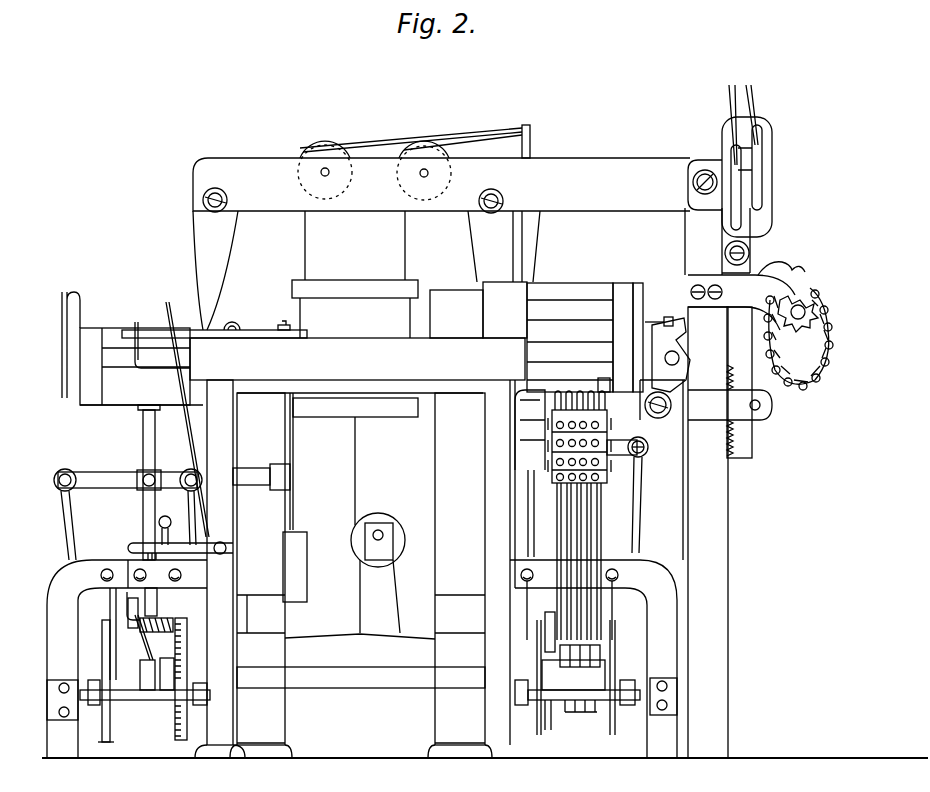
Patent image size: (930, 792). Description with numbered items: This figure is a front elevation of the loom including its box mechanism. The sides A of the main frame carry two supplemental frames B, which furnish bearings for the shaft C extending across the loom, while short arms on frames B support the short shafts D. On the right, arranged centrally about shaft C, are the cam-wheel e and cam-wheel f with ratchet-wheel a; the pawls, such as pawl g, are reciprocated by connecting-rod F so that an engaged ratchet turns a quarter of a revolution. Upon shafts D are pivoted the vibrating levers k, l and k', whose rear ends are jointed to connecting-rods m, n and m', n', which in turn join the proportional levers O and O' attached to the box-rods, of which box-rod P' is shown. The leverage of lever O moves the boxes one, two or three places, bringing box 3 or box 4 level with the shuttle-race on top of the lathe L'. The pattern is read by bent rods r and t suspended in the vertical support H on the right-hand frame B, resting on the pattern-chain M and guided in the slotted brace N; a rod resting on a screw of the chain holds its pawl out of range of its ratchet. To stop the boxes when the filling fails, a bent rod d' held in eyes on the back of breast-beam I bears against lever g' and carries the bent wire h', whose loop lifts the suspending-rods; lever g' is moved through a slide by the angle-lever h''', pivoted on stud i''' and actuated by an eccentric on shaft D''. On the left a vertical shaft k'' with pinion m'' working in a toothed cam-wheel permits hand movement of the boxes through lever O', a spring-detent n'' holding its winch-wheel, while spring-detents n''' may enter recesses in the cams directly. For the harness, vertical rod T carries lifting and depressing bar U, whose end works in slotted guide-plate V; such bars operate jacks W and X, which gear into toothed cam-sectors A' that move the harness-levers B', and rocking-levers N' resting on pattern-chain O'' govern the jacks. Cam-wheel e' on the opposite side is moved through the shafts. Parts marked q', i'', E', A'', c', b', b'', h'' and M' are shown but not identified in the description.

The harness-lever B' is at (511, 203).
The breast-beam I is at (357, 359).
The lever g' is at (214, 342).
The bent rod r is at (288, 338).
The bent rod d' is at (375, 347).
The rod q' is at (186, 407).
The box-rod P' is at (145, 482).
The proportional lever O' is at (128, 480).
The connecting-rod m' is at (80, 525).
The connecting-rod n' is at (184, 518).
The lathe L' is at (174, 530).
The spring-detent n'' is at (180, 551).
The pins i'' is at (141, 540).
The side of the frame A is at (355, 569).
The cross beam E' is at (361, 677).
The block A'' is at (295, 567).
The shaft D'' is at (296, 600).
The angle-lever h''' is at (274, 461).
The stud i''' is at (303, 461).
The supplemental frame B is at (362, 659).
The shaft C is at (640, 676).
The short shaft D is at (360, 697).
The vibrating lever k' is at (94, 692).
The vibrating lever l is at (414, 692).
The vibrating lever k is at (521, 692).
The cam-wheel e' is at (112, 682).
The cam-wheel f is at (395, 689).
The rod c' is at (139, 652).
The bracket b' is at (135, 610).
The vertical shaft k'' is at (161, 602).
The pinion m'' is at (166, 647).
The spring-detent n''' is at (363, 661).
The connecting-rod m is at (523, 513).
The slotted brace N is at (579, 427).
The vertical support H is at (598, 528).
The bent rod t is at (595, 518).
The box 4 is at (560, 535).
The box 3 is at (584, 535).
The proportional lever O is at (627, 445).
The pattern-chain M is at (615, 470).
The connecting-rod n is at (643, 505).
The connecting-rod F is at (569, 616).
The carrier b'' is at (573, 675).
The ratchet-pawl g is at (580, 656).
The cam-wheel e is at (549, 715).
The ratchet-wheel a is at (580, 710).
The toothed cam-sector A' is at (671, 355).
The pin h'' is at (661, 312).
The bent wire h' is at (618, 401).
The vertical rod T is at (726, 170).
The slotted guide-plate V is at (764, 186).
The lifting and depressing bar U is at (764, 152).
The vertical jack W is at (730, 262).
The vertical jack X is at (748, 105).
The rocking-lever N' is at (749, 289).
The pattern-chain O'' is at (814, 316).
The chain M' is at (799, 342).